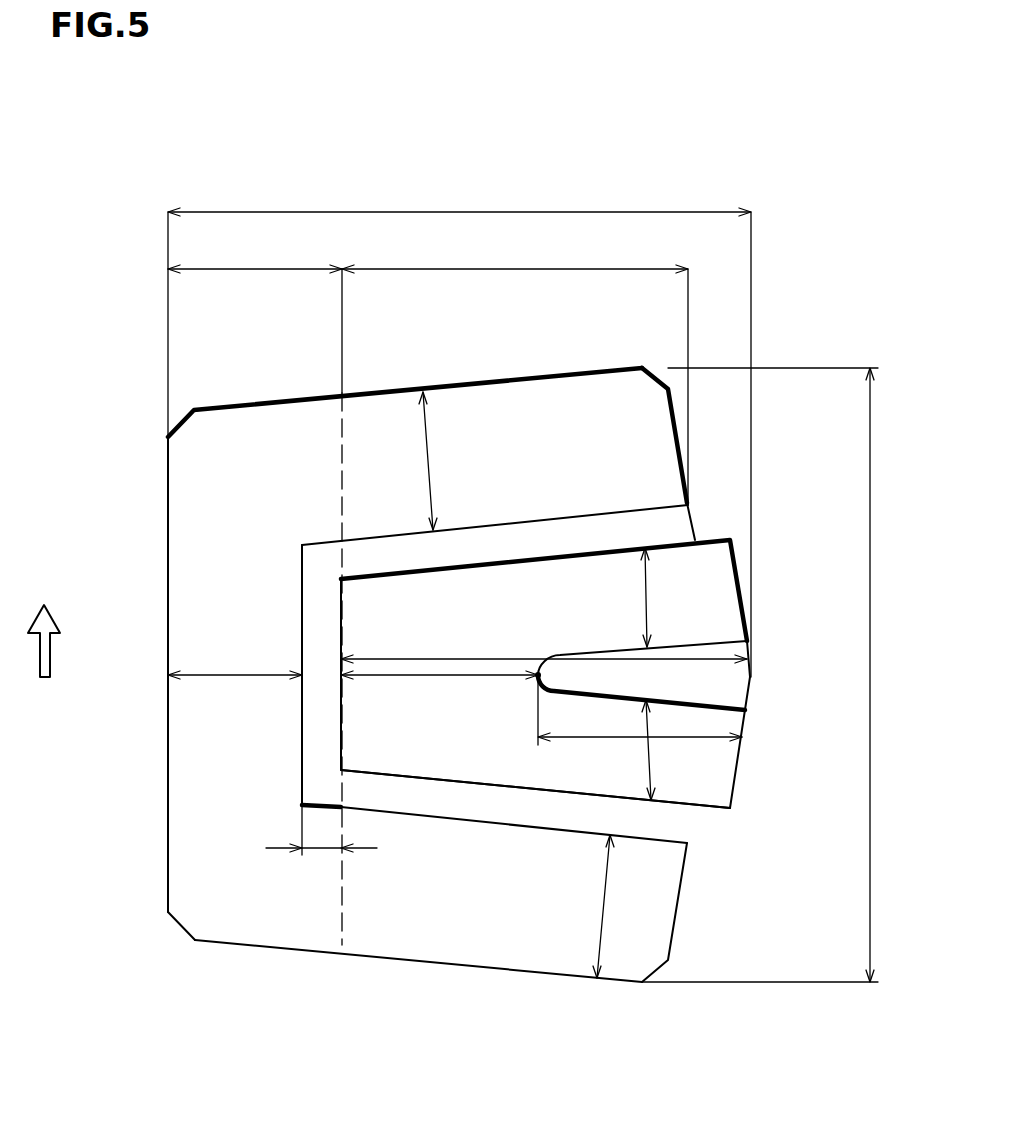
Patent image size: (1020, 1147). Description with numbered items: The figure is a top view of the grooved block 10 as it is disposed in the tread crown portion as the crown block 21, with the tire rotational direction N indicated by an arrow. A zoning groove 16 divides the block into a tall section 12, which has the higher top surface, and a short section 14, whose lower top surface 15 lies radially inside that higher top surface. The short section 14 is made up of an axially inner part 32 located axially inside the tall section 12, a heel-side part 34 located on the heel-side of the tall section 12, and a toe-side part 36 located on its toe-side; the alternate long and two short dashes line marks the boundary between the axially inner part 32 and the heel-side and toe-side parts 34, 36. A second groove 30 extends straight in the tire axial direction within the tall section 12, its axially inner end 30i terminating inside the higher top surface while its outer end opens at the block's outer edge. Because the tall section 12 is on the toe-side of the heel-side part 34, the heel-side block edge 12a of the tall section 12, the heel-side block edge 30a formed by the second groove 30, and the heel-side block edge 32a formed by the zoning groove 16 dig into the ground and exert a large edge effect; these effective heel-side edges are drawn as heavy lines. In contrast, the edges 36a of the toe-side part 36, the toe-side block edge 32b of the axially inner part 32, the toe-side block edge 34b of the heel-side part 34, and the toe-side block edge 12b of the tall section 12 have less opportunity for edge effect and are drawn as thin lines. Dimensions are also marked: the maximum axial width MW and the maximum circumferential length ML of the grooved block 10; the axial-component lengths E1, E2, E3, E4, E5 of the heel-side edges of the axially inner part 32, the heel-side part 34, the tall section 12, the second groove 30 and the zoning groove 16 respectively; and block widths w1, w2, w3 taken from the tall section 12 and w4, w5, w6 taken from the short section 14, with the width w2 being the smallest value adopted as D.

The grooved block 10 is at (442, 704).
The crown block 21 is at (110, 415).
The tall section 12 is at (597, 581).
The heel-side block edge of the tall section 12a is at (500, 562).
The toe-side block edge of the tall section 12b is at (713, 808).
The short section 14 is at (384, 997).
The lower top surface 15 is at (228, 900).
The zoning groove 16 is at (322, 745).
The second groove 30 is at (687, 515).
The axially inner end of the second groove 30i is at (562, 657).
The heel-side block edge formed by the second groove 30a is at (690, 698).
The axially inner part 32 is at (228, 510).
The heel-side block edge formed by the zoning groove 32a is at (323, 805).
The toe-side block edge of the axially inner part 32b is at (255, 948).
The heel-side part 34 is at (618, 445).
The toe-side block edge of the heel-side part 34b is at (632, 512).
The toe-side part 36 is at (532, 928).
The block edge of the toe-side part 36a is at (655, 841).
The maximum axial width MW is at (459, 428).
The maximum length ML is at (779, 675).
The length of the axial component of the heel-side block edge of the axially inner p E1 is at (255, 589).
The length of the axial component of the heel-side block edge of the heel-side part E2 is at (515, 369).
The length of the axial component of the heel-side block edge of the tall section E3 is at (407, 658).
The length of the axial component of the heel-side block edge formed by the second g E4 is at (588, 738).
The length of the axial component of the heel-side block edge formed by the zoning g E5 is at (323, 850).
The block width w1 is at (447, 676).
The block width w2 is at (647, 753).
The block width w3 is at (648, 600).
The block width w4 is at (427, 458).
The block width w5 is at (607, 907).
The block width w6 is at (233, 673).
The tire rotational direction N is at (44, 659).